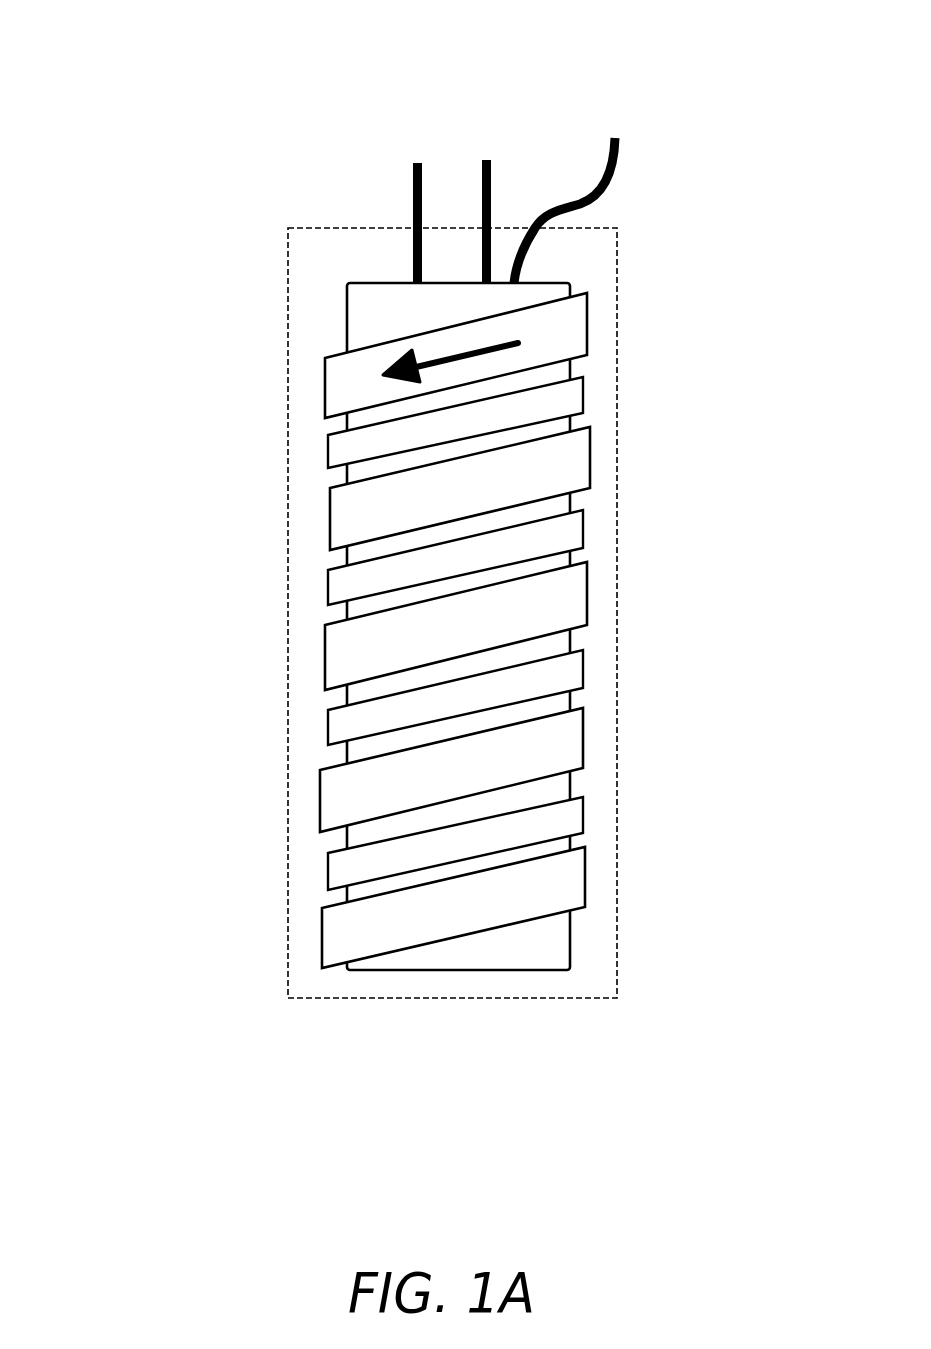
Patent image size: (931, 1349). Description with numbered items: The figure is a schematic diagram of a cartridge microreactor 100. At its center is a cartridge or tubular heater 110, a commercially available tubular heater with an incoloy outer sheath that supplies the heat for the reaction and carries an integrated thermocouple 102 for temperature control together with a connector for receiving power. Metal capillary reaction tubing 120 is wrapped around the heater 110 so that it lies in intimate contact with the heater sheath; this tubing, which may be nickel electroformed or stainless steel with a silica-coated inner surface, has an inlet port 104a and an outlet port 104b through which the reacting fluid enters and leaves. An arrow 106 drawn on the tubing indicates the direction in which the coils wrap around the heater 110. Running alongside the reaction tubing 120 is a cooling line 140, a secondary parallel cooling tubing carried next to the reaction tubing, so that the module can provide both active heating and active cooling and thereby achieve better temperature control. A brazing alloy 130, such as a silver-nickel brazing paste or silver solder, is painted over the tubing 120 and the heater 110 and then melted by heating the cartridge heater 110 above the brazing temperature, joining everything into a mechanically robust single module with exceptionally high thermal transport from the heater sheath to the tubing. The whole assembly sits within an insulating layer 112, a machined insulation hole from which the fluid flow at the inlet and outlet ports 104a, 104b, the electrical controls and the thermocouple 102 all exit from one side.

The cartridge microreactor 100 is at (135, 176).
The thermocouple 102 is at (607, 188).
The inlet port 104a is at (413, 163).
The outlet port 104b is at (487, 160).
The winding direction arrow 106 is at (345, 383).
The cartridge or tubular heater 110 is at (497, 972).
The insulating layer 112 is at (603, 938).
The metal capillary reaction tubing 120 is at (568, 327).
The brazing alloy 130 is at (333, 322).
The cooling line 140 is at (568, 397).